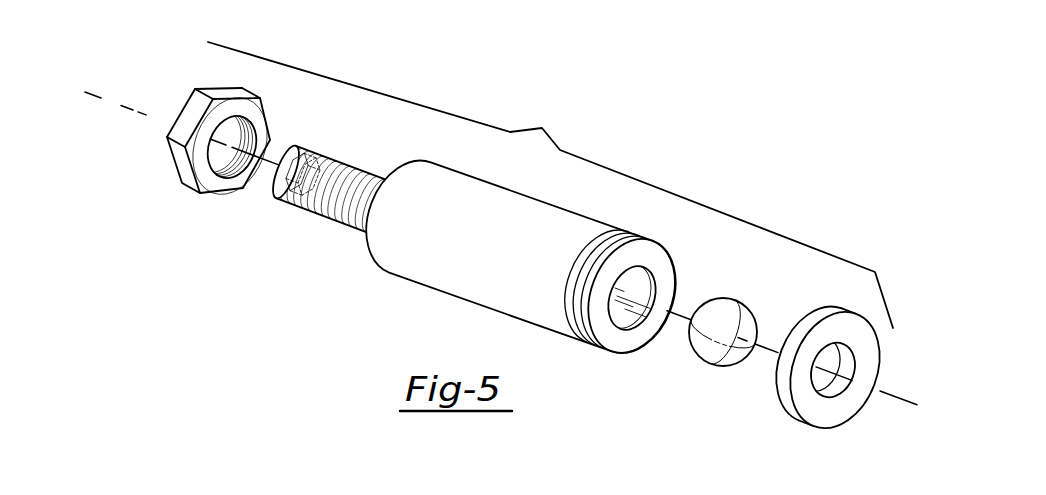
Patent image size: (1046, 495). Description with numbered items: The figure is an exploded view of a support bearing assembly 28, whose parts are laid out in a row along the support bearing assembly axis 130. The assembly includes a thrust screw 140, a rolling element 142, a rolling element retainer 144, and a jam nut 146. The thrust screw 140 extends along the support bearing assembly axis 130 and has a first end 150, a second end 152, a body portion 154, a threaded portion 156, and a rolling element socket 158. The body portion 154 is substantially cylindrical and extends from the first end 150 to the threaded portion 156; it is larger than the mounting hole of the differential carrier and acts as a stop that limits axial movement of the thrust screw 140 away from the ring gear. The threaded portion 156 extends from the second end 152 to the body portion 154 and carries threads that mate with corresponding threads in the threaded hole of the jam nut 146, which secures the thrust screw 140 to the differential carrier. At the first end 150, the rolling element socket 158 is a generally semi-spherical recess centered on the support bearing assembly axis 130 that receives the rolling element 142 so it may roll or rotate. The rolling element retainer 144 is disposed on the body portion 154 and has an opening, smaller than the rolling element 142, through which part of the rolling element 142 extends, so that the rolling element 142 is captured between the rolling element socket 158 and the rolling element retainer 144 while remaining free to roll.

The support bearing assembly 28 is at (550, 185).
The support bearing assembly axis 130 is at (762, 355).
The thrust screw 140 is at (544, 276).
The rolling element 142 is at (731, 302).
The rolling element retainer 144 is at (781, 393).
The jam nut 146 is at (178, 112).
The first end 150 is at (649, 330).
The second end 152 is at (281, 146).
The body portion 154 is at (519, 191).
The threaded portion 156 is at (350, 162).
The rolling element socket 158 is at (662, 280).